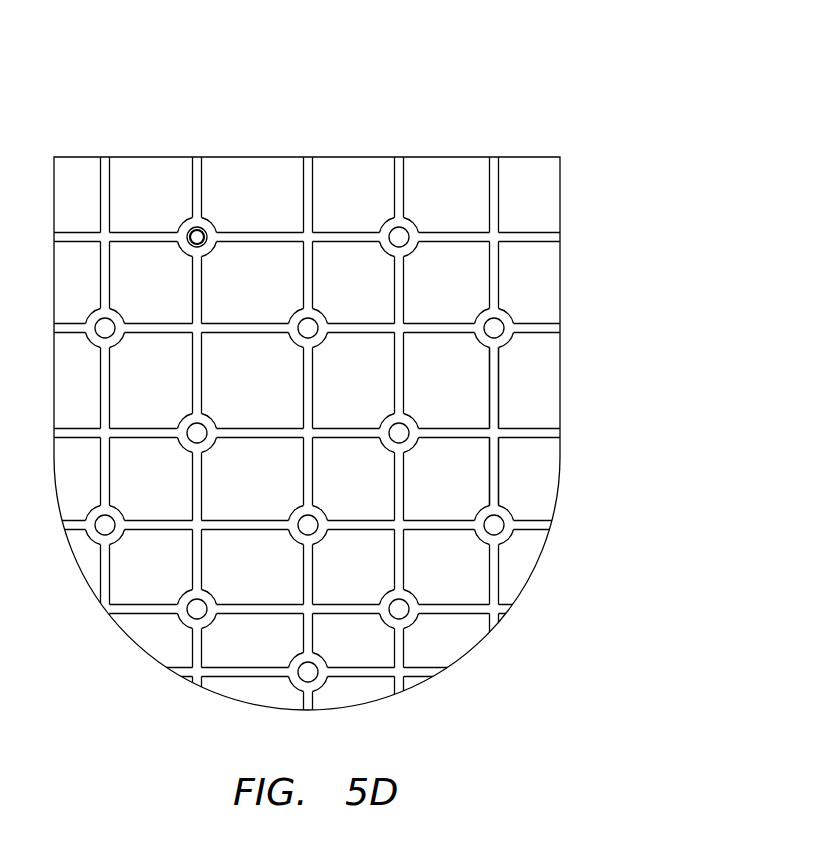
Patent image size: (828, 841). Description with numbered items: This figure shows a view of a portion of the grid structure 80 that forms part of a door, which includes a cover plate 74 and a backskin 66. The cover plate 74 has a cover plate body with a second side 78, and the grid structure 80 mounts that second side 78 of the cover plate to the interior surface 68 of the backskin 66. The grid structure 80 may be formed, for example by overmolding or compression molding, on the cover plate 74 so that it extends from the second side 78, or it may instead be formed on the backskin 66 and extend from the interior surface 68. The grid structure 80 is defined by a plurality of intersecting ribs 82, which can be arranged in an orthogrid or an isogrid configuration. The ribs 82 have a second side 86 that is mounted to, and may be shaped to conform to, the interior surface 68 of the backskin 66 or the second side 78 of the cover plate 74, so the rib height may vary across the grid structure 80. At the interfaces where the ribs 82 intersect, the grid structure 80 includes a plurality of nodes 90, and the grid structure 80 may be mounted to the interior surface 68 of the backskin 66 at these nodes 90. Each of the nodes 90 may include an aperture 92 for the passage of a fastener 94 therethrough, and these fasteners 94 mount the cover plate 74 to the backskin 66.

The backskin 66 is at (538, 94).
The cover plate 74 is at (365, 360).
The interior surface 68 is at (533, 199).
The second side 78 is at (365, 410).
The grid structure 80 is at (518, 561).
The ribs 82 is at (458, 232).
The second side 86 is at (493, 366).
The nodes 90 is at (165, 205).
The apertures 92 is at (199, 235).
The fasteners 94 is at (203, 252).